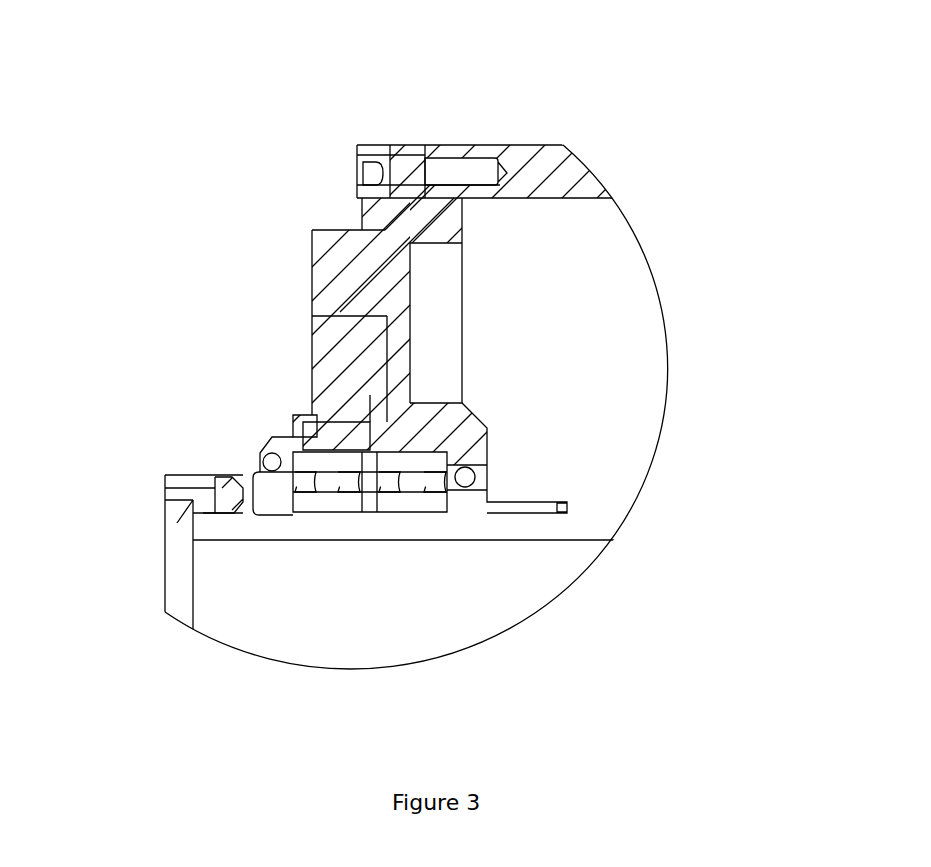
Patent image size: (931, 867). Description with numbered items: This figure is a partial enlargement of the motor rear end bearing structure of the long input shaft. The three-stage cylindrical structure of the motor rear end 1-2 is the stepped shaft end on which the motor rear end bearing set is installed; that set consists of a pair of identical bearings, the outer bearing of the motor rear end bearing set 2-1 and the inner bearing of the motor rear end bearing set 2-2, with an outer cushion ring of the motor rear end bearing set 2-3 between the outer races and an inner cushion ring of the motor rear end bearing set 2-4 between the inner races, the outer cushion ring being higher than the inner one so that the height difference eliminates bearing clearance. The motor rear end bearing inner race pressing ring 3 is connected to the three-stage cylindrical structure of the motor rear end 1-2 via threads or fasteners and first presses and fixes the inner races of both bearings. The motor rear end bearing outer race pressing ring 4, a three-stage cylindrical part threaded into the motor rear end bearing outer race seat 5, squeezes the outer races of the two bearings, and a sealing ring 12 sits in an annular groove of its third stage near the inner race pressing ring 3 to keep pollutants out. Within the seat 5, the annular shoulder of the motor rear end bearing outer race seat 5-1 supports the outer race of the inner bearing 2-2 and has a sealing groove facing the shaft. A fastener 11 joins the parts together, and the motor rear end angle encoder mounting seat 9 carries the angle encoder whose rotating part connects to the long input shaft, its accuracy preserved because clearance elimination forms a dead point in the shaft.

The three-stage cylindrical structure of the motor rear end 1-2 is at (337, 563).
The outer bearing of the motor rear end bearing set 2-1 is at (297, 529).
The inner bearing of the motor rear end bearing set 2-2 is at (442, 515).
The outer cushion ring of the motor rear end bearing set 2-3 is at (353, 431).
The inner cushion ring of the motor rear end bearing set 2-4 is at (390, 533).
The motor rear end bearing inner race pressing ring 3 is at (249, 473).
The motor rear end bearing outer race pressing ring 4 is at (280, 388).
The motor rear end bearing outer race seat 5 is at (357, 210).
The annular shoulder of the motor rear end bearing outer race seat 5-1 is at (507, 448).
The motor rear end angle encoder mounting seat 9 is at (160, 468).
The fastener 11 is at (373, 142).
The sealing ring 12 is at (498, 487).